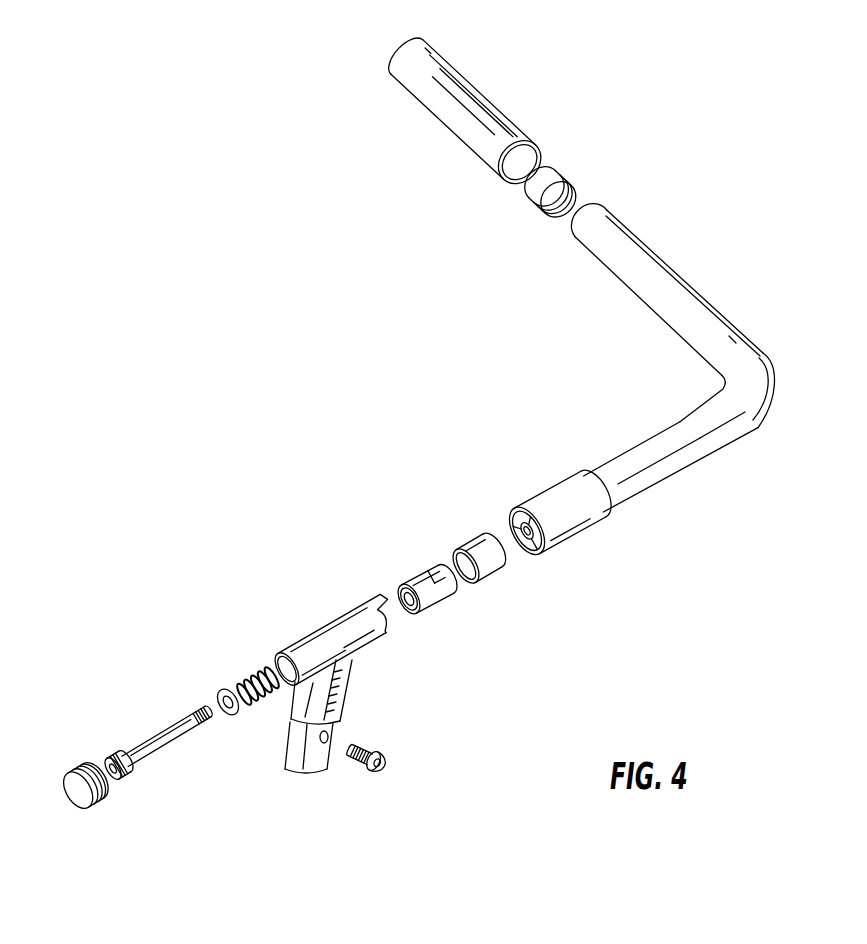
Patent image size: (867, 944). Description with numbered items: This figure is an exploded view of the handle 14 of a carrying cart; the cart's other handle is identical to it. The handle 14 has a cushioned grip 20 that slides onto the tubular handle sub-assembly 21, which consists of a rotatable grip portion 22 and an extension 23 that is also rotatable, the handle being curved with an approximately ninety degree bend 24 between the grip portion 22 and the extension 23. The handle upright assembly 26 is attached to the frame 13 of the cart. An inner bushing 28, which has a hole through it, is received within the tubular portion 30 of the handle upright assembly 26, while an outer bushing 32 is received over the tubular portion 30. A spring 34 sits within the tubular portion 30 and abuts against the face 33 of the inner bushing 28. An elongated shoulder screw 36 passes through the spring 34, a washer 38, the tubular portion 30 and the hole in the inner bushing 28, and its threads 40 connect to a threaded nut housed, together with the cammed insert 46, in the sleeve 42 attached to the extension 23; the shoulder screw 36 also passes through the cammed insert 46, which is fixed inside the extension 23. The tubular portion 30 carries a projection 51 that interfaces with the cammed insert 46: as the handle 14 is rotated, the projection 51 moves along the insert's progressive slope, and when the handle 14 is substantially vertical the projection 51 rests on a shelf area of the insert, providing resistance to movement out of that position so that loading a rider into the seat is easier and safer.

The frame 13 is at (303, 747).
The handle 14 is at (758, 351).
The cushioned grip 20 is at (498, 118).
The tubular handle sub-assembly 21 is at (718, 338).
The grip portion 22 is at (710, 301).
The extension 23 is at (697, 463).
The bend 24 is at (767, 407).
The handle upright assembly 26 is at (340, 608).
The inner bushing 28 is at (443, 598).
The tubular portion 30 is at (370, 647).
The outer bushing 32 is at (482, 547).
The face 33 is at (473, 624).
The spring 34 is at (268, 673).
The shoulder screw 36 is at (150, 762).
The washer 38 is at (232, 717).
The threads 40 is at (202, 710).
The sleeve 42 is at (577, 519).
The cammed insert 46 is at (510, 524).
The projection 51 is at (377, 595).